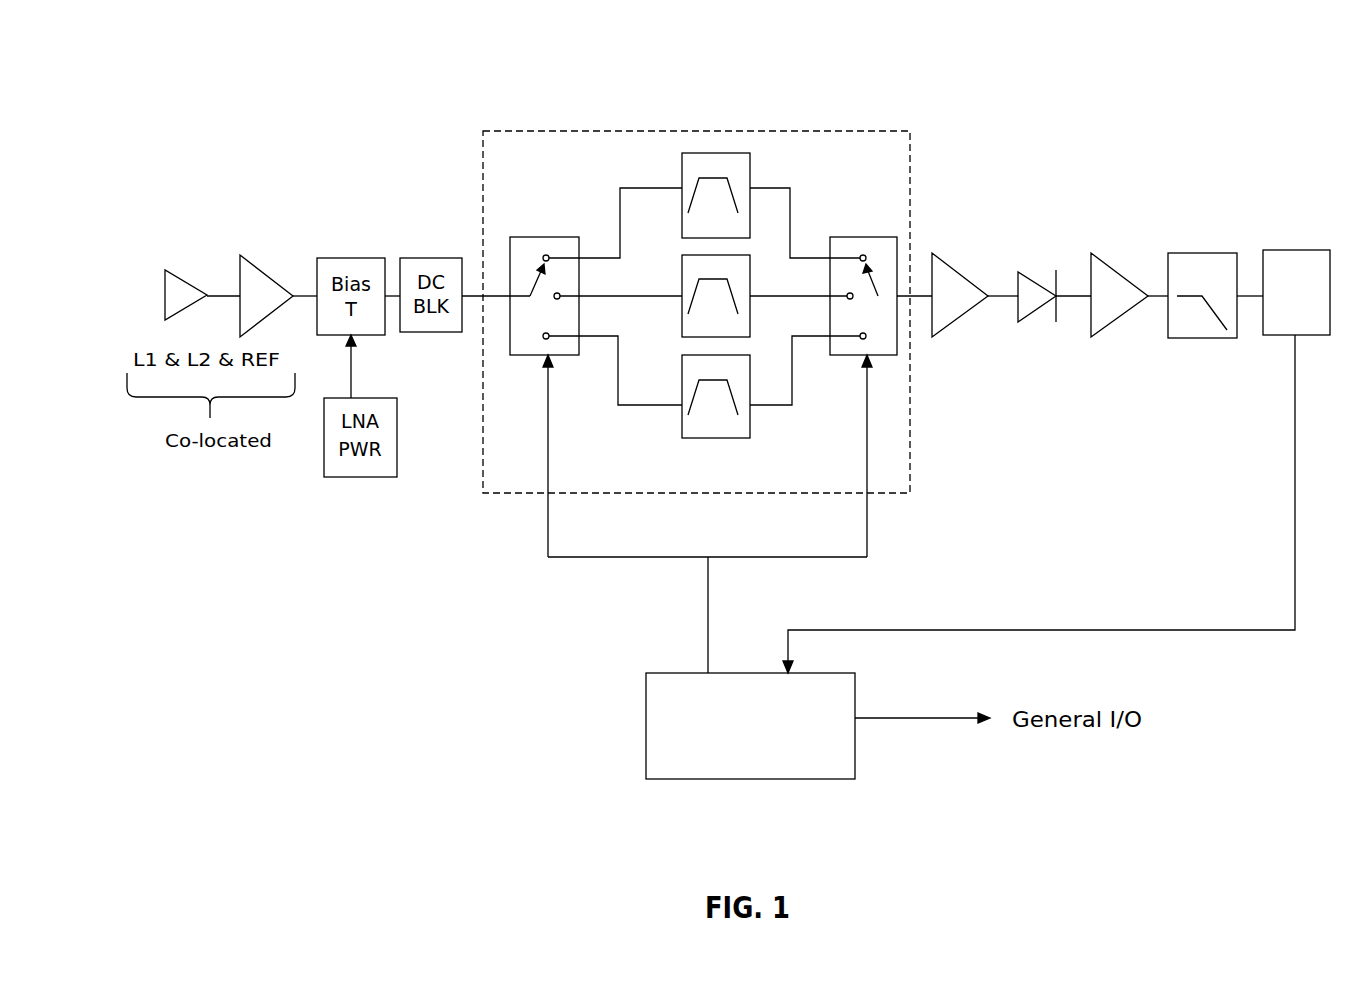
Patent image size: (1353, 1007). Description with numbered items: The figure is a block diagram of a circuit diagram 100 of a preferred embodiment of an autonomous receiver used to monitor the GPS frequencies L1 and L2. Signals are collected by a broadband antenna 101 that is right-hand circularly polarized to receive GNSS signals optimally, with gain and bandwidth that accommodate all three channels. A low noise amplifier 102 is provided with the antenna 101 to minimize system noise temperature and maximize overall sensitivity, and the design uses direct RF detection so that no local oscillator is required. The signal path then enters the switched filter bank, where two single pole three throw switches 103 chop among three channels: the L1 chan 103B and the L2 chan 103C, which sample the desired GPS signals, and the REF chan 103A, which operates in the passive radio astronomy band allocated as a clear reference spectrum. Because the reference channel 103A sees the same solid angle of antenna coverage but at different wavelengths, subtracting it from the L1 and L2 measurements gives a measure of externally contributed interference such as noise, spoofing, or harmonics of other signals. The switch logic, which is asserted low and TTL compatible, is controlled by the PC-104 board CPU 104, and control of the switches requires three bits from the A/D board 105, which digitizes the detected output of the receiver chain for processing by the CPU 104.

The circuit diagram 100 is at (209, 80).
The antenna 101 is at (190, 272).
The low noise amplifier 102 is at (262, 272).
The switches 103 is at (734, 370).
The REF chan 103A is at (742, 426).
The L1 chan 103B is at (737, 173).
The L2 chan 103C is at (742, 275).
The CPU 104 is at (646, 737).
The A/D board 105 is at (1295, 250).